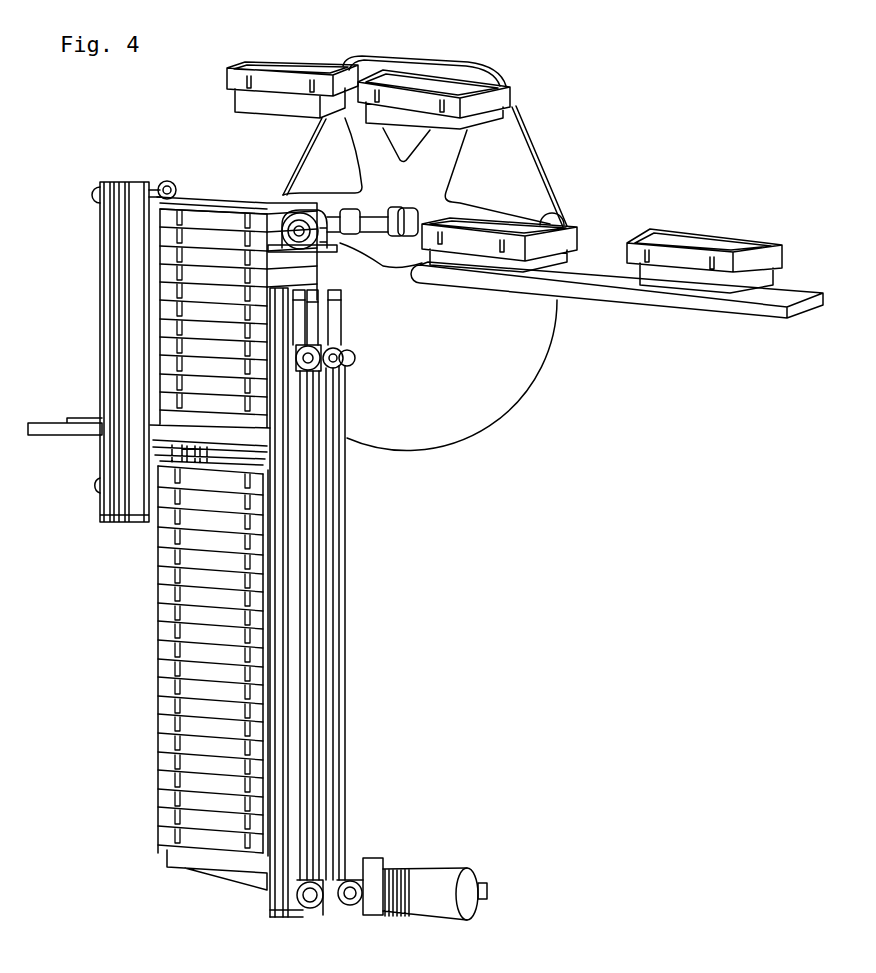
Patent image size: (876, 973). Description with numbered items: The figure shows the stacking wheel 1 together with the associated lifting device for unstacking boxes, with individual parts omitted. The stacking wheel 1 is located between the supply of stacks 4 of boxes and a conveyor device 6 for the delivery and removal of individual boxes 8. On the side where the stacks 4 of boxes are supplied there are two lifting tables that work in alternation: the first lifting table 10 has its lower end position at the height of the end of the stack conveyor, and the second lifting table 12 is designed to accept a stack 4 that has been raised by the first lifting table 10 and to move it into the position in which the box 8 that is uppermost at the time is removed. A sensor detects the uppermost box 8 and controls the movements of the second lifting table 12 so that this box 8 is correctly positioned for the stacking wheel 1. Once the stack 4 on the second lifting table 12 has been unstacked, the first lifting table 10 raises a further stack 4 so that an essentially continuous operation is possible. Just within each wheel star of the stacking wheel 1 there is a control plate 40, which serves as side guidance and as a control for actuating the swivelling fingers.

The stacking wheel 1 is at (499, 181).
The stack of boxes 4 is at (245, 196).
The conveyor device 6 is at (613, 305).
The box 8 is at (240, 101).
The first lifting table 10 is at (200, 870).
The second lifting table 12 is at (177, 457).
The control plate 40 is at (483, 387).